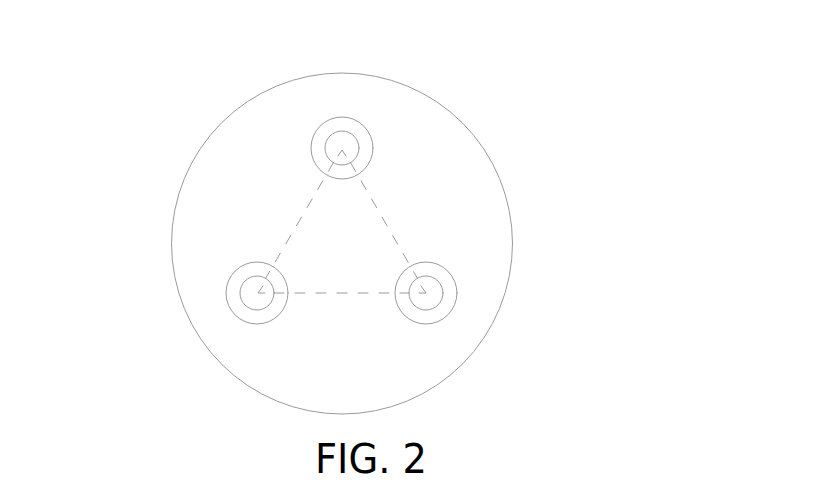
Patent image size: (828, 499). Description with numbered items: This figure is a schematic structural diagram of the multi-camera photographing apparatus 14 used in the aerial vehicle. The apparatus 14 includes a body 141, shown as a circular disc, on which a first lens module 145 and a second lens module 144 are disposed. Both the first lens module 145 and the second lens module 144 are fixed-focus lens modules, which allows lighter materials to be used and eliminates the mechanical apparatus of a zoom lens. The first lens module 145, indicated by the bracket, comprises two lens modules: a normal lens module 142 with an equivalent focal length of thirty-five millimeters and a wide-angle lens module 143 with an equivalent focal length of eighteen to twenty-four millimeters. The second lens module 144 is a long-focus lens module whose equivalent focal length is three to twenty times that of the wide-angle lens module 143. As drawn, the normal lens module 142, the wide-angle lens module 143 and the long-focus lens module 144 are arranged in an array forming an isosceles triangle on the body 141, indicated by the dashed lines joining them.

The multi-camera photographing apparatus 14 is at (348, 34).
The body 141 is at (203, 147).
The normal lens module 142 is at (350, 143).
The wide-angle lens module 143 is at (428, 292).
The second lens module 144 is at (253, 292).
The first lens module 145 is at (613, 125).